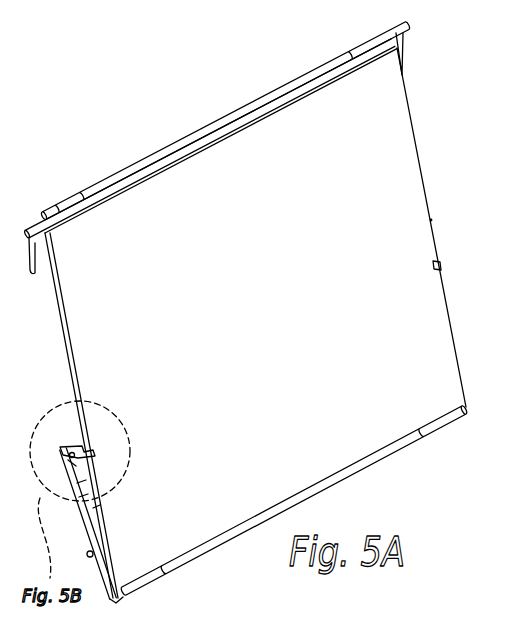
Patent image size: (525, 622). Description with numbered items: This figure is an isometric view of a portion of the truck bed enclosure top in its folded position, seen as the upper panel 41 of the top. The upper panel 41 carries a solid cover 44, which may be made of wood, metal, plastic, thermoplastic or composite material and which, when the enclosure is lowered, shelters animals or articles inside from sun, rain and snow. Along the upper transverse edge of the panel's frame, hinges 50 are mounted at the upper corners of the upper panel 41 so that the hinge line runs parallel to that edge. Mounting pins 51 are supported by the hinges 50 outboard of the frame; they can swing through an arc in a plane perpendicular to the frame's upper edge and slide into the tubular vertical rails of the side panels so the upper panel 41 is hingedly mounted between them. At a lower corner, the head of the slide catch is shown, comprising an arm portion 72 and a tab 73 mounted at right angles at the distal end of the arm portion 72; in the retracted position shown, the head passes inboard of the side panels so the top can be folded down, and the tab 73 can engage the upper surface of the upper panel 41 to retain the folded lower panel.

The upper panel 41 is at (445, 163).
The solid cover 44 is at (315, 230).
The hinges 50 is at (64, 211).
The mounting pins 51 is at (33, 277).
The arm portion 72 is at (89, 448).
The tab 73 is at (90, 452).